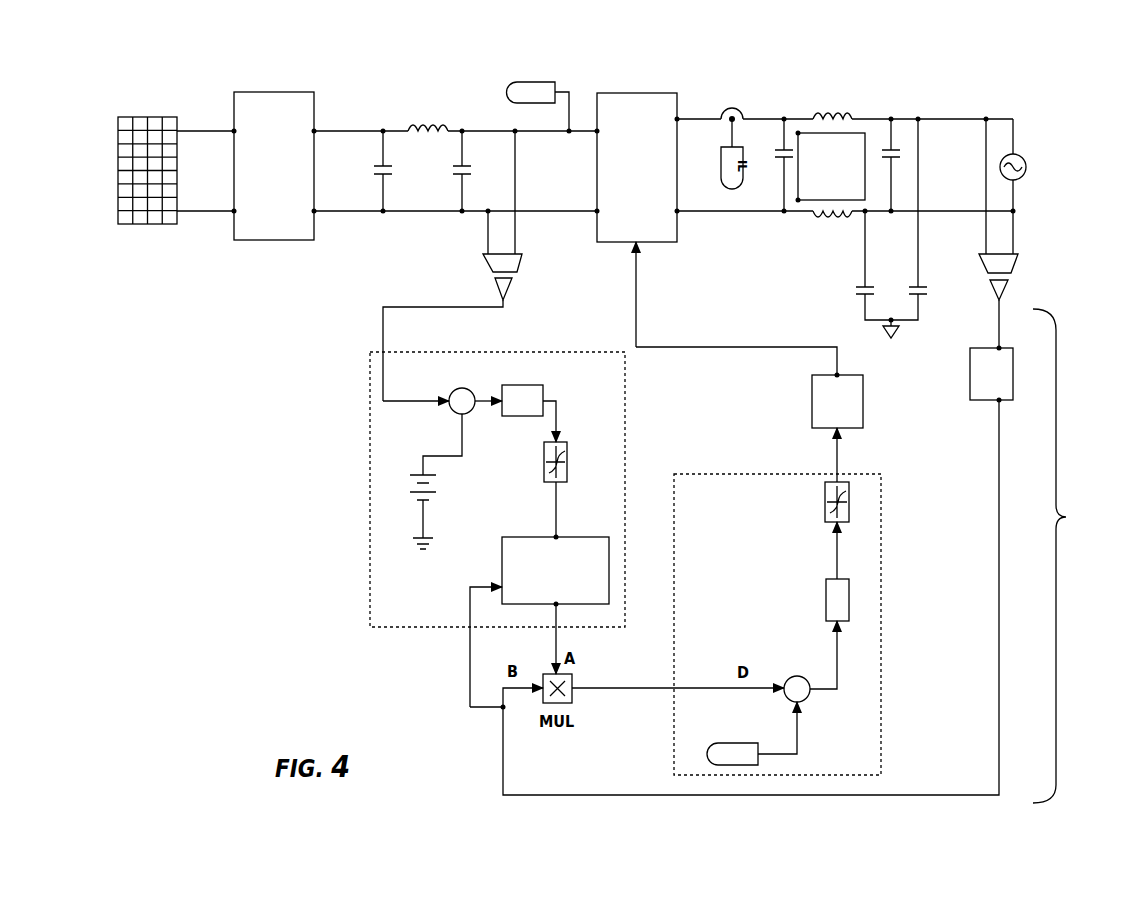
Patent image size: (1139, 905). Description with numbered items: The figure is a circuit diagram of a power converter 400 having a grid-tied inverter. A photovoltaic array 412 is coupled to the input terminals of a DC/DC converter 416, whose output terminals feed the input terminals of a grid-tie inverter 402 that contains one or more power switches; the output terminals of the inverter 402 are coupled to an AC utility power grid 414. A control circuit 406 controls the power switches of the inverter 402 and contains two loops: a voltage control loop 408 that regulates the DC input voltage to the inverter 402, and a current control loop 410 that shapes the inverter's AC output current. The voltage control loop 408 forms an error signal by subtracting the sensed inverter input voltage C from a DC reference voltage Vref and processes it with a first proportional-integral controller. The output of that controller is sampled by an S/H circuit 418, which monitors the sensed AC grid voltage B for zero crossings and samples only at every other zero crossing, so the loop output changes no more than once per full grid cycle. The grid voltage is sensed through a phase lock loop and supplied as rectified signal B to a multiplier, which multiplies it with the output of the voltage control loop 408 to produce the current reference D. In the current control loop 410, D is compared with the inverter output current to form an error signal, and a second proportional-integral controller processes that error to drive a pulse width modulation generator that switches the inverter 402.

The power converter 400 is at (702, 53).
The grid-tie inverter 402 is at (678, 102).
The control circuit 406 is at (808, 551).
The voltage control loop 408 is at (370, 417).
The current control loop 410 is at (881, 522).
The photovoltaic (PV) array 412 is at (171, 117).
The AC utility power grid 414 is at (1015, 152).
The DC/DC converter 416 is at (314, 108).
The S/H circuit 418 is at (502, 545).